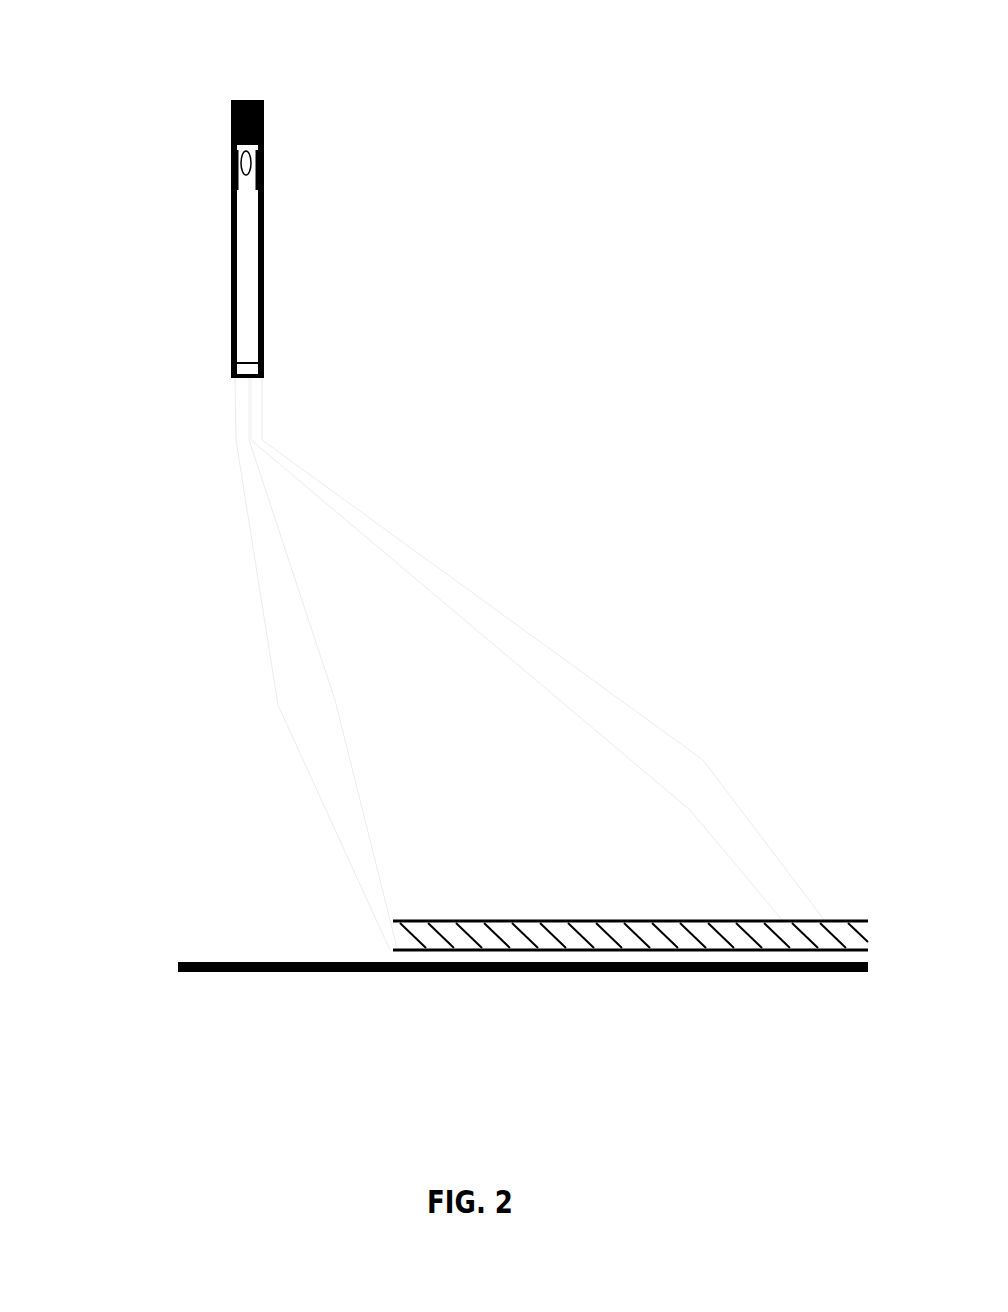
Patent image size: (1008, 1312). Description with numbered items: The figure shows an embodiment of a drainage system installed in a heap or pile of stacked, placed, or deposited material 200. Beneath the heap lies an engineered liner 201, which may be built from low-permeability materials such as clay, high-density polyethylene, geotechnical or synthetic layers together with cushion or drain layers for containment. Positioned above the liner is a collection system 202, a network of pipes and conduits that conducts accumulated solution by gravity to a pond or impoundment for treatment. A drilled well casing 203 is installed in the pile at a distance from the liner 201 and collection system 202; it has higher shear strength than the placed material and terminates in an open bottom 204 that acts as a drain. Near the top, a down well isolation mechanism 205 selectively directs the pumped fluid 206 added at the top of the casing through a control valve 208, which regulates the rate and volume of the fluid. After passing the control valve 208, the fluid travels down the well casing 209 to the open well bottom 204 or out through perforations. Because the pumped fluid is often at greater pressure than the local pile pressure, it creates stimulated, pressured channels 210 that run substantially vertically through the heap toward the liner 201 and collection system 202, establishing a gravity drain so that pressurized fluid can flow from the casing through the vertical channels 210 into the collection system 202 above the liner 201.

The heap or pile of stacked, placed, and/or deposited material 200 is at (672, 209).
The engineered liner 201 is at (230, 947).
The collection system 202 is at (570, 910).
The drilled well casing 203 is at (263, 318).
The open bottom 204 is at (230, 392).
The down well isolation mechanism 205 is at (263, 130).
The pumped fluid at the top of the well casing 206 is at (233, 106).
The control valve 208 is at (252, 177).
The well casing 209 is at (250, 268).
The stimulated, pressured channels 210 is at (688, 805).